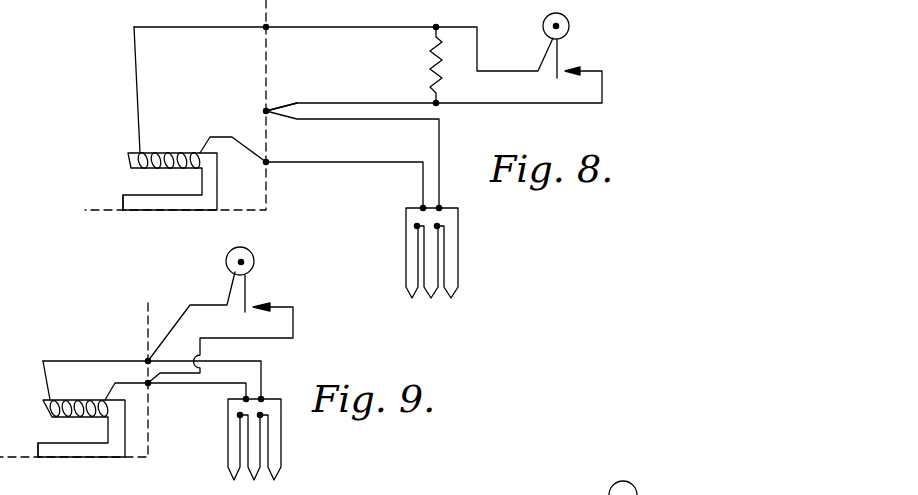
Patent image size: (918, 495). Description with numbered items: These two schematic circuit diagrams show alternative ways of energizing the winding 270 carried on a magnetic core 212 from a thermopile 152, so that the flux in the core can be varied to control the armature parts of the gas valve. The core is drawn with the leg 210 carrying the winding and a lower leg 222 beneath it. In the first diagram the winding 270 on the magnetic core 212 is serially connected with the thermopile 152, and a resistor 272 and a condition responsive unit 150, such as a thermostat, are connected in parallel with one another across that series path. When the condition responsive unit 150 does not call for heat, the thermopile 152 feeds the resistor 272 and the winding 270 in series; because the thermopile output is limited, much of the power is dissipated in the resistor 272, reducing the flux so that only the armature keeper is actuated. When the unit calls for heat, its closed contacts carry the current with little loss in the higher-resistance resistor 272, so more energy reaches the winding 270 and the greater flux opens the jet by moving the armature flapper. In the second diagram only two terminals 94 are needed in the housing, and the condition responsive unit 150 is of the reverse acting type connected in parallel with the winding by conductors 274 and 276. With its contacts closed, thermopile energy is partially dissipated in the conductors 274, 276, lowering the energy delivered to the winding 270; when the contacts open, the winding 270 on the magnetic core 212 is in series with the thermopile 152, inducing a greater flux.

In FIG. 8, the terminals 94 is at (267, 28).
In FIG. 9, the terminals 94 is at (147, 381).
In FIG. 8, the condition responsive unit 150 is at (599, 56).
In FIG. 9, the condition responsive unit 150 is at (283, 288).
In FIG. 8, the thermopile 152 is at (487, 265).
In FIG. 9, the thermopile 152 is at (310, 458).
In FIG. 8, the leg 210 is at (160, 169).
In FIG. 9, the leg 210 is at (74, 417).
In FIG. 8, the magnetic core 212 is at (217, 183).
In FIG. 9, the magnetic core 212 is at (121, 429).
In FIG. 8, the lower leg 222 is at (140, 198).
In FIG. 9, the lower leg 222 is at (52, 446).
In FIG. 8, the winding 270 is at (155, 152).
In FIG. 9, the winding 270 is at (97, 400).
In FIG. 8, the resistor 272 is at (431, 68).
In FIG. 9, the conductor 274 is at (178, 320).
In FIG. 9, the conductor 276 is at (272, 338).